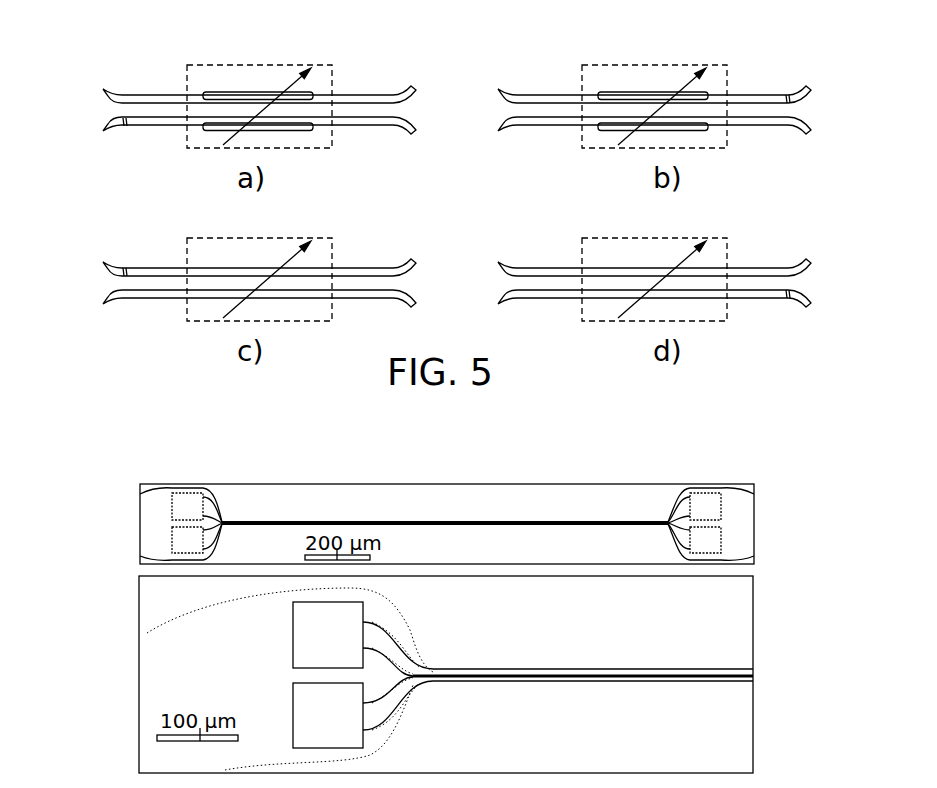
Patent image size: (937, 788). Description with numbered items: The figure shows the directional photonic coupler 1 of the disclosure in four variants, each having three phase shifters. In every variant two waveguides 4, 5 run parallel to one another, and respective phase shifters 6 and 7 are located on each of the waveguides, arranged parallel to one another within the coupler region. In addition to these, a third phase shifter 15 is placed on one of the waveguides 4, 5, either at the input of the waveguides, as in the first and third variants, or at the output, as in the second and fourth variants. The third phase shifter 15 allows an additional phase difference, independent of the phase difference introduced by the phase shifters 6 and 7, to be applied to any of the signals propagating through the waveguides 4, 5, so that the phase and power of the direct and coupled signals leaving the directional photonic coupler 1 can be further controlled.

The directional photonic coupler 1 is at (242, 65).
The waveguide 4 is at (122, 92).
The waveguide 5 is at (508, 122).
The phase shifter 6 is at (223, 92).
The phase shifter 7 is at (218, 132).
The third phase shifter 15 is at (119, 265).